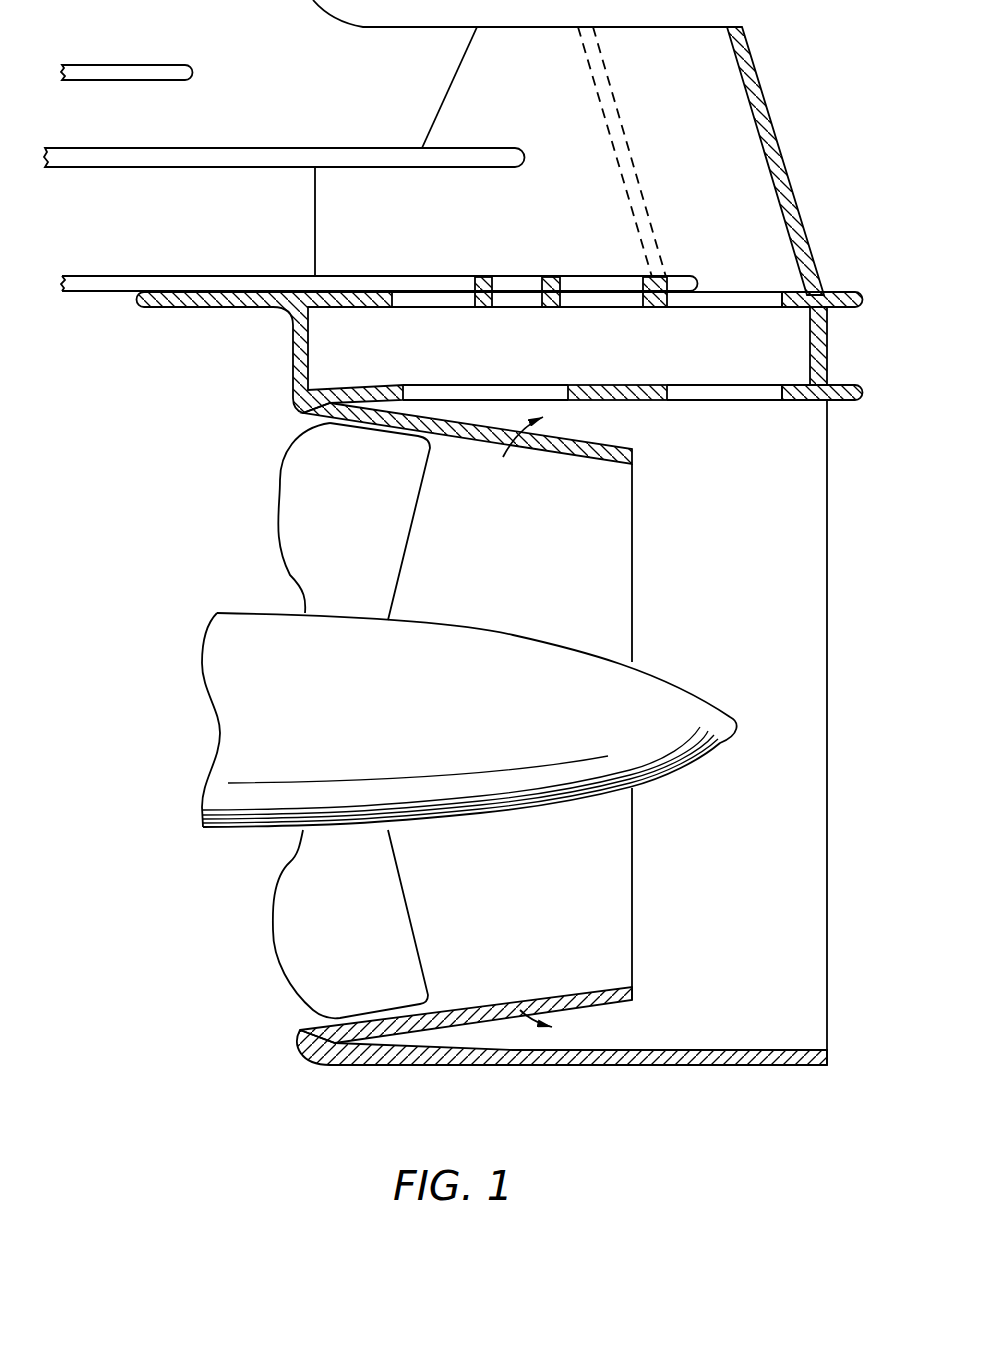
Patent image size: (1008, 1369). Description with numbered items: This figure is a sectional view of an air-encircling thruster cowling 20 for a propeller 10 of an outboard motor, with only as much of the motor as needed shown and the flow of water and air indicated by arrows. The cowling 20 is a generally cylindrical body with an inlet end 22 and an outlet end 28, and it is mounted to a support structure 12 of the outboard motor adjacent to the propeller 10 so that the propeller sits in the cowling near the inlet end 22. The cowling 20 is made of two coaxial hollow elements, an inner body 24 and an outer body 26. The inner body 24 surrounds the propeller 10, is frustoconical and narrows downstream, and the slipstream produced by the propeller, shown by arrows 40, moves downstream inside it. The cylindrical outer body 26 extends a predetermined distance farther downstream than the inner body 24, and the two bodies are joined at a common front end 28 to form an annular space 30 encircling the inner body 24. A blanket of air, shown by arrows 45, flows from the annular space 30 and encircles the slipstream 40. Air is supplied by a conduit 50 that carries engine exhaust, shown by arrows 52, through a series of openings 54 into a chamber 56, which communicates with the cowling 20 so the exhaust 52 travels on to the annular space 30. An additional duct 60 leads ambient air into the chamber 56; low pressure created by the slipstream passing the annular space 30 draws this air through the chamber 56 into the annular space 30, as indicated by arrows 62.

The propeller 10 is at (447, 821).
The support structure 12 is at (103, 293).
The thruster cowling 20 is at (678, 1113).
The inlet end 22 is at (290, 993).
The inner body 24 is at (607, 985).
The outer body 26 is at (762, 1068).
The outlet end 28 is at (828, 1007).
The annular space 30 is at (500, 447).
The slipstream 40 is at (693, 559).
The layer of air 45 is at (693, 423).
The conduit 50 is at (315, 86).
The exhaust 52 is at (585, 168).
The openings 54 is at (400, 290).
The chamber 56 is at (637, 362).
The duct 60 is at (675, 156).
The air flow arrows 62 is at (737, 346).